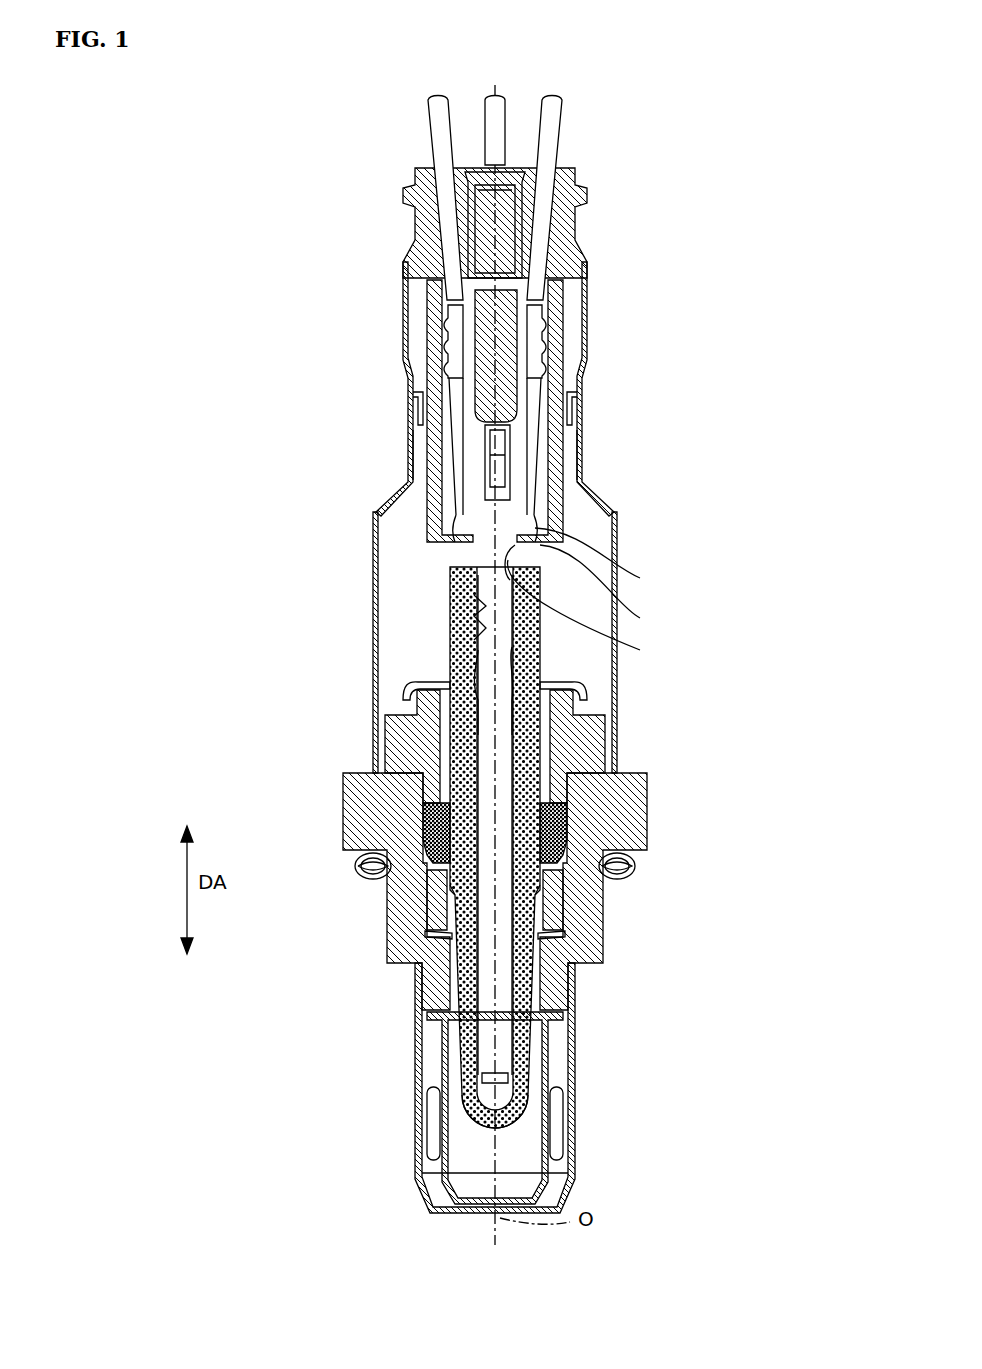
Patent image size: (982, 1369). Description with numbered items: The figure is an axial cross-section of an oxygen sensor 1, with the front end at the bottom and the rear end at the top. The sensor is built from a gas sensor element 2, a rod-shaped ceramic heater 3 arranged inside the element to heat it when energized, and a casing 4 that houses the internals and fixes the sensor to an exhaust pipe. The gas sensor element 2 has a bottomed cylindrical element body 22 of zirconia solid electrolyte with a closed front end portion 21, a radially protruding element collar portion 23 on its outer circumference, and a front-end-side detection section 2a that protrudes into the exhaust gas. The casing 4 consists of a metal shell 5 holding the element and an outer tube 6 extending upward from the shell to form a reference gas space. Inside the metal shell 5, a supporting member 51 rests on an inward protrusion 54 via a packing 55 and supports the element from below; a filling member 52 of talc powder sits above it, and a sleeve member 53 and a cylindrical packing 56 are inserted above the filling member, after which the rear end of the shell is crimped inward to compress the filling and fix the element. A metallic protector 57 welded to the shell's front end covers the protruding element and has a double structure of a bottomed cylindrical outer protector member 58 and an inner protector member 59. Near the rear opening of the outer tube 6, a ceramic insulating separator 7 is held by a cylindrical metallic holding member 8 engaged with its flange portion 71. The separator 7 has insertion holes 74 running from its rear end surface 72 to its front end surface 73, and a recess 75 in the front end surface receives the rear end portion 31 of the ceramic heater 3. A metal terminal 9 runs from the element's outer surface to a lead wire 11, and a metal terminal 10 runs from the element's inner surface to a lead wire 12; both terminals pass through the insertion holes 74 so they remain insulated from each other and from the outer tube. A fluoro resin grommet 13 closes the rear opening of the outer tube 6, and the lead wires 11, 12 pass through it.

The oxygen sensor 1 is at (666, 157).
The gas sensor element 2 is at (460, 600).
The front-end-side detection section 2a is at (483, 1123).
The ceramic heater 3 is at (500, 1042).
The casing 4 is at (268, 735).
The metal shell 5 is at (365, 825).
The outer tube 6 is at (395, 720).
The insulating separator 7 is at (560, 322).
The metallic holding member 8 is at (602, 406).
The metal terminal 9 is at (450, 340).
The metal terminal 10 is at (540, 303).
The lead wire 11 is at (440, 146).
The lead wire 12 is at (550, 141).
The grommet 13 is at (432, 226).
The closed front end portion 21 is at (495, 1132).
The element body 22 is at (447, 653).
The element collar portion 23 is at (450, 870).
The rear end portion 31 is at (488, 445).
The supporting member 51 is at (573, 905).
The filling member 52 is at (555, 840).
The sleeve member 53 is at (602, 730).
The inward protrusion 54 is at (437, 947).
The packing 55 is at (425, 937).
The cylindrical packing 56 is at (560, 690).
The metallic protector 57 is at (581, 1088).
The outer protector member 58 is at (575, 1075).
The inner protector member 59 is at (545, 1106).
The flange portion 71 is at (596, 376).
The rear end surface 72 is at (547, 272).
The front end surface 73 is at (598, 588).
The insertion holes 74 is at (596, 560).
The recess 75 is at (581, 603).